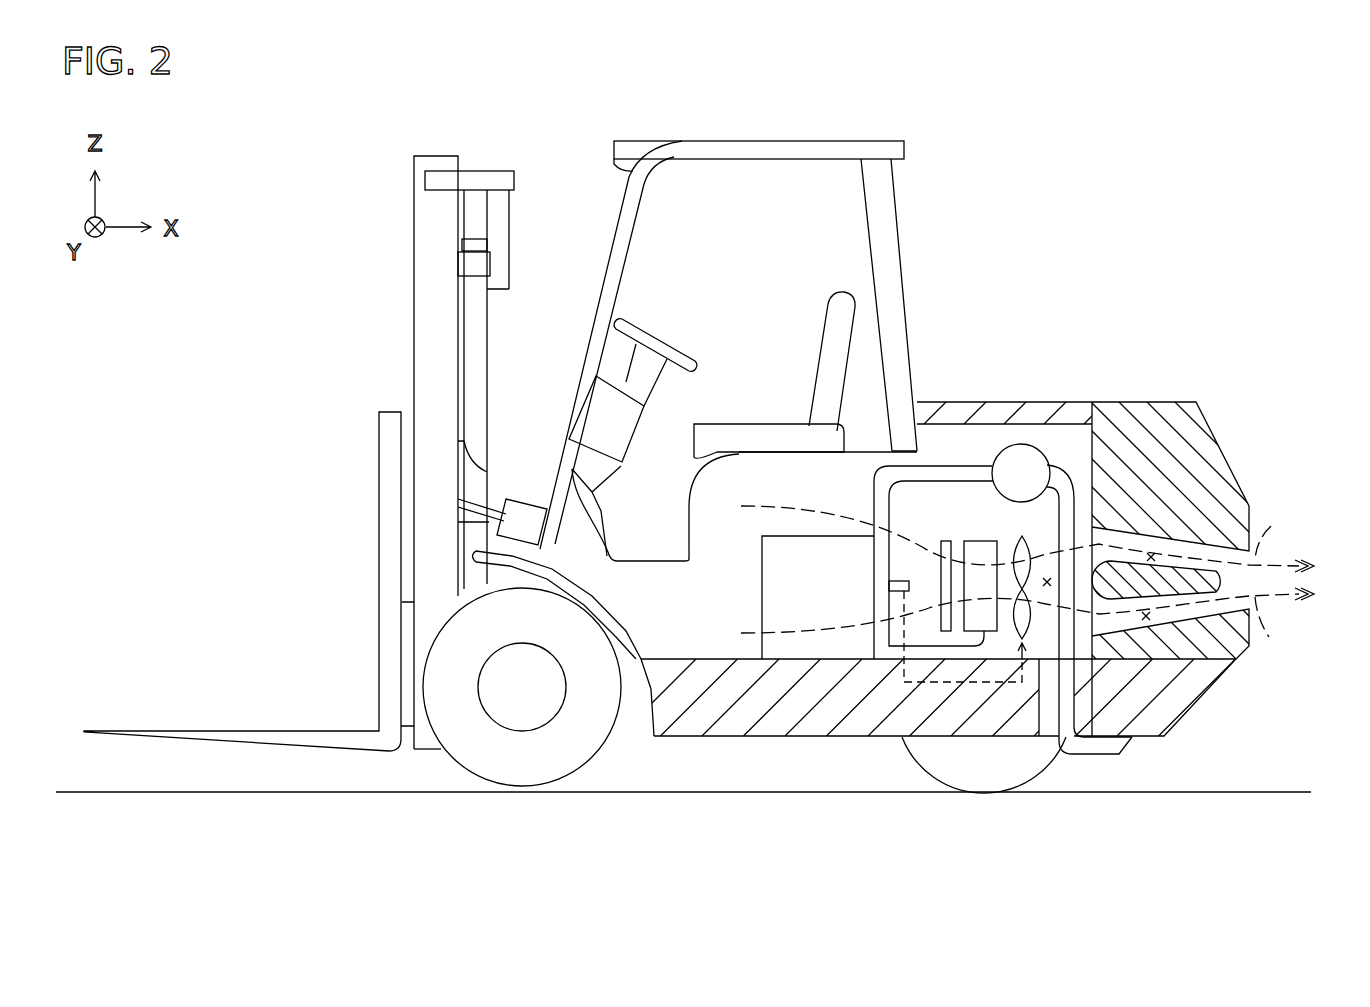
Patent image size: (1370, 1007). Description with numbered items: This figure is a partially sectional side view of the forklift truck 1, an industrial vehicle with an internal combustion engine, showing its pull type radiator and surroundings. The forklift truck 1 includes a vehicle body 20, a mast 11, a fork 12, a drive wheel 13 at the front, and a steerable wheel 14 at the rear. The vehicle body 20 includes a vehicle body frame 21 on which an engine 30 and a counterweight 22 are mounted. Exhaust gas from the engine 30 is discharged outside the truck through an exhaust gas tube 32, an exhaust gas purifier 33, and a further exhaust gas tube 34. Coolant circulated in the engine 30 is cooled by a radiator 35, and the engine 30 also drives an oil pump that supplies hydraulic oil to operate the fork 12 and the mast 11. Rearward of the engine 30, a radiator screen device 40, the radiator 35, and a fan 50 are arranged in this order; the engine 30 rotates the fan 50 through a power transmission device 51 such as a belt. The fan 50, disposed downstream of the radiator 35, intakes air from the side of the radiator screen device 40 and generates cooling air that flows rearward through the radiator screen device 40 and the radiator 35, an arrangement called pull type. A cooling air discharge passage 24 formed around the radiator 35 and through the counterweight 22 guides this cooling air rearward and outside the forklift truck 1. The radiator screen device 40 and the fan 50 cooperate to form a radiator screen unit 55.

The forklift truck 1 is at (1094, 187).
The mast 11 is at (418, 258).
The fork 12 is at (277, 735).
The drive wheel 13 is at (490, 753).
The steerable wheel 14 is at (998, 768).
The vehicle body 20 is at (657, 598).
The vehicle body frame 21 is at (837, 703).
The counterweight 22 is at (1212, 628).
The cooling air discharge passage 24 is at (1048, 583).
The engine 30 is at (812, 574).
The exhaust gas tube 32 is at (907, 466).
The exhaust gas purifier 33 is at (1028, 472).
The exhaust gas tube 34 is at (1088, 755).
The radiator 35 is at (979, 553).
The radiator screen device 40 is at (947, 545).
The fan 50 is at (1022, 537).
The power transmission device 51 is at (968, 690).
The radiator screen unit 55 is at (943, 311).